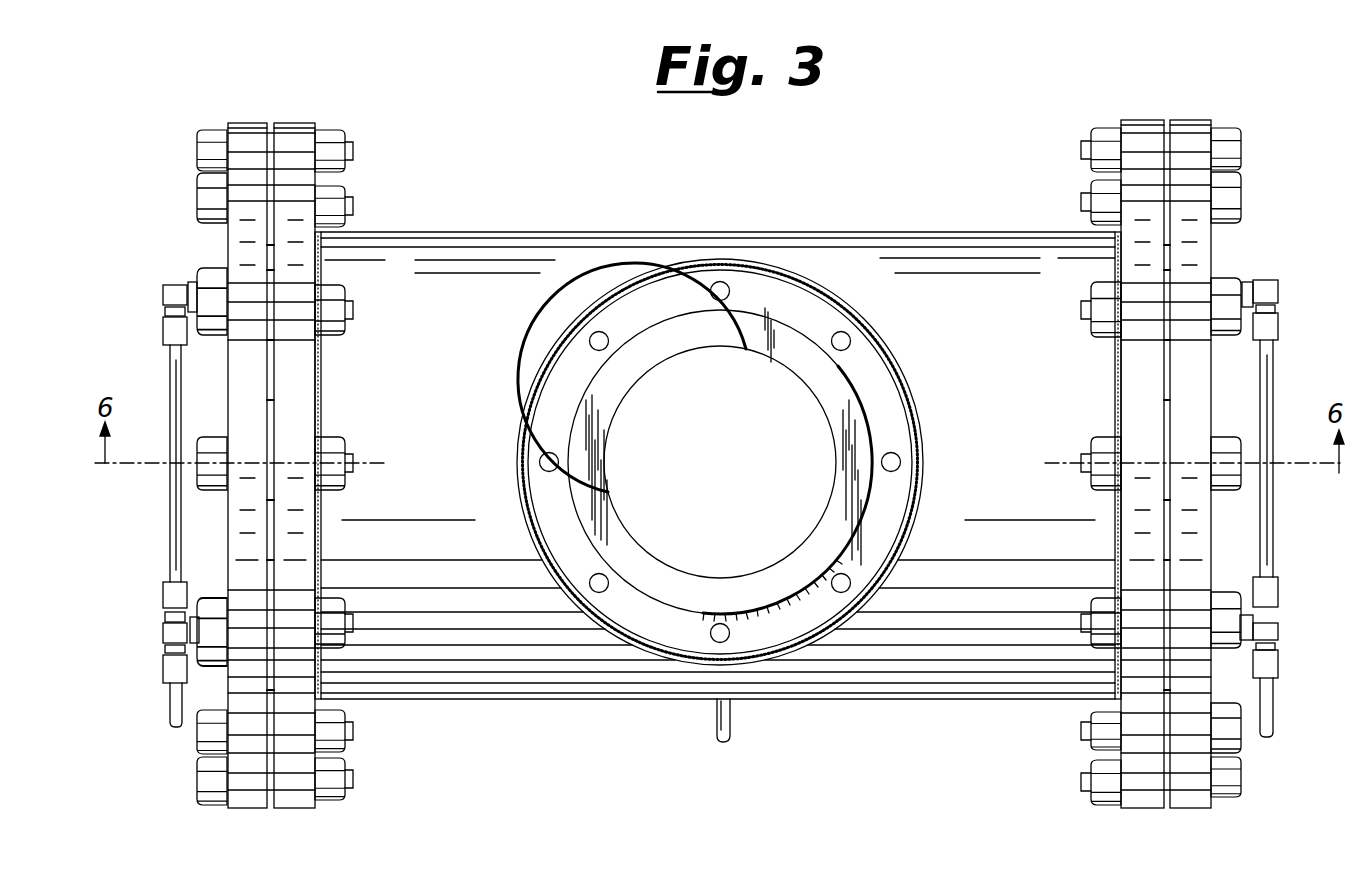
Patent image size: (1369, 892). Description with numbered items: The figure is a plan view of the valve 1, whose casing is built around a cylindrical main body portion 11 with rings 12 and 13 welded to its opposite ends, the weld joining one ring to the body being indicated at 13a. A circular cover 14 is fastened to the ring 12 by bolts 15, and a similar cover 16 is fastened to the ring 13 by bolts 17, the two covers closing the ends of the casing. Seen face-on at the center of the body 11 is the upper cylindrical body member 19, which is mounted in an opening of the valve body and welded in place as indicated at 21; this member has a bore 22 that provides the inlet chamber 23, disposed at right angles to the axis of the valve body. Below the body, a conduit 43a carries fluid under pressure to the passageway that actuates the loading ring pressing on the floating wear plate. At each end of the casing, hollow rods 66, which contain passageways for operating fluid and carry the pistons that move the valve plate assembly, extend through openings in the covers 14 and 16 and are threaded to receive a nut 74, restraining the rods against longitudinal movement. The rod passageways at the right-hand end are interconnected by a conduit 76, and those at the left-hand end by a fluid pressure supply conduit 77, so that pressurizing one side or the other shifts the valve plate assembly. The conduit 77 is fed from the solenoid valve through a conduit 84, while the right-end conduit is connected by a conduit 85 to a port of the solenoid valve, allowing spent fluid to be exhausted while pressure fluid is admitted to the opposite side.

The valve 1 is at (513, 220).
The cylindrical main body portion 11 is at (942, 232).
The ring 12 is at (300, 122).
The ring 13 is at (1140, 118).
The weld 13a is at (318, 262).
The circular cover 14 is at (251, 122).
The bolts 15 is at (203, 197).
The cover 16 is at (1190, 118).
The bolts 17 is at (1228, 182).
The upper cylindrical body member 19 is at (805, 305).
The weld 21 is at (598, 305).
The bore 22 is at (807, 383).
The inlet chamber 23 is at (736, 519).
The conduit 43a is at (723, 720).
The rods 66 is at (188, 293).
The nut 74 is at (200, 290).
The conduit 76 is at (1268, 378).
The fluid pressure supply conduit 77 is at (175, 548).
The conduit 84 is at (175, 710).
The conduit 85 is at (1273, 700).